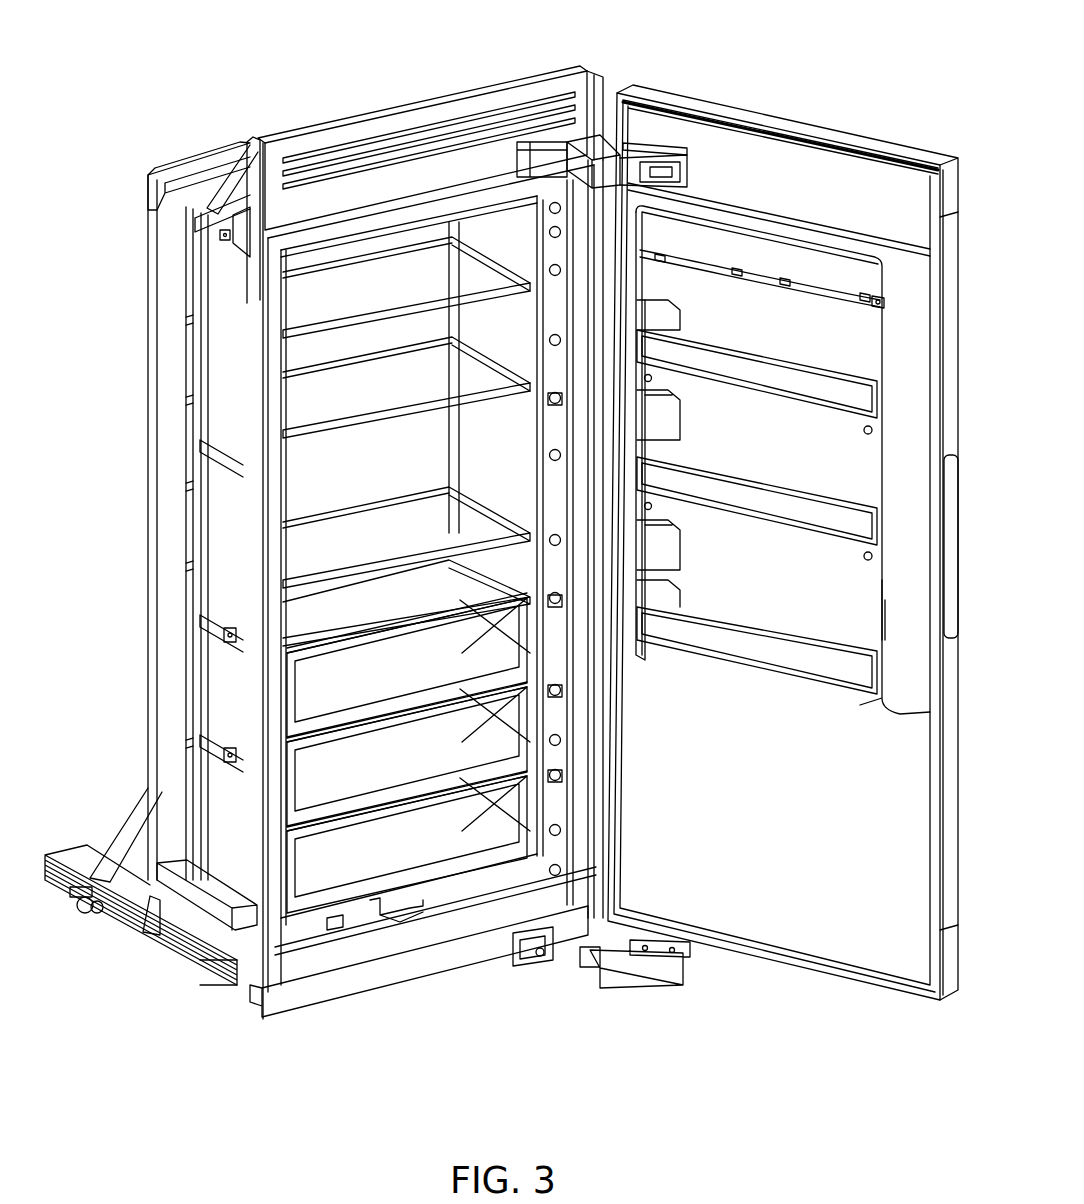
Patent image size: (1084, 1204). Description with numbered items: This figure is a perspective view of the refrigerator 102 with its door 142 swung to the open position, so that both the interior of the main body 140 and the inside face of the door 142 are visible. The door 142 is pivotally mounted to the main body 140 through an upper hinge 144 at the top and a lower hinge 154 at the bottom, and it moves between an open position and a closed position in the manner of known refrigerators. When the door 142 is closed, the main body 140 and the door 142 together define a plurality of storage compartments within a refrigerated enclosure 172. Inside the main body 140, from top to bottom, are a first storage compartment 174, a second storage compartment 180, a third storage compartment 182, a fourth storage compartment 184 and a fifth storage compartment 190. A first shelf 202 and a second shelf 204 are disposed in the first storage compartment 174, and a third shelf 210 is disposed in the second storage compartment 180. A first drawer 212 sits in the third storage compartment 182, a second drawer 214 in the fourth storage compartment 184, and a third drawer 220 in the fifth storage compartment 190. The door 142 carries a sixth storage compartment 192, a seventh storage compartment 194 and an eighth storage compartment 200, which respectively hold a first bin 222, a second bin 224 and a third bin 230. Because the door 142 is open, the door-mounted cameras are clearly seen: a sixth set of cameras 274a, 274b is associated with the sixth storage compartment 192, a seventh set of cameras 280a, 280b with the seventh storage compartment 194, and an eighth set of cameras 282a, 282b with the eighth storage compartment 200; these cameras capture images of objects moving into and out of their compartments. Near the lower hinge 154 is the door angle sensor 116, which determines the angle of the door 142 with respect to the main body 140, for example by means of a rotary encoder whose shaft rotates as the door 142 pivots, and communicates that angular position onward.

The refrigerator 102 is at (387, 512).
The main body 140 is at (283, 140).
The upper hinge 144 is at (598, 135).
The camera of sixth set of cameras 274a is at (655, 248).
The camera of sixth set of cameras 274b is at (878, 303).
The first shelf 202 is at (323, 325).
The first storage compartment 174 is at (389, 350).
The second shelf 204 is at (322, 428).
The second storage compartment 180 is at (389, 475).
The refrigerated enclosure 172 is at (300, 500).
The third shelf 210 is at (320, 647).
The first drawer 212 is at (320, 737).
The second drawer 214 is at (320, 827).
The third storage compartment 182 is at (400, 680).
The fourth storage compartment 184 is at (400, 770).
The fifth storage compartment 190 is at (400, 858).
The third drawer 220 is at (243, 907).
The door angle sensor 116 is at (537, 955).
The lower hinge 154 is at (617, 960).
The door 142 is at (950, 725).
The sixth storage compartment 192 is at (744, 318).
The seventh storage compartment 194 is at (753, 441).
The eighth storage compartment 200 is at (753, 569).
The first bin 222 is at (788, 358).
The second bin 224 is at (795, 485).
The third bin 230 is at (795, 630).
The camera of seventh set of cameras 280a is at (650, 376).
The camera of seventh set of cameras 280b is at (866, 432).
The camera of eighth set of cameras 282a is at (650, 504).
The camera of eighth set of cameras 282b is at (866, 558).